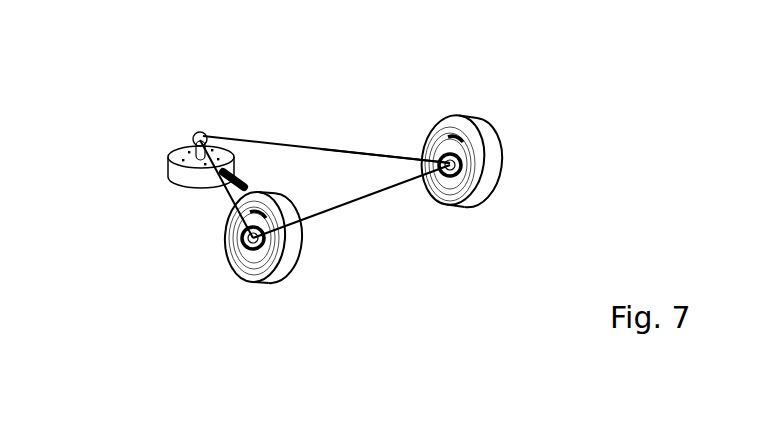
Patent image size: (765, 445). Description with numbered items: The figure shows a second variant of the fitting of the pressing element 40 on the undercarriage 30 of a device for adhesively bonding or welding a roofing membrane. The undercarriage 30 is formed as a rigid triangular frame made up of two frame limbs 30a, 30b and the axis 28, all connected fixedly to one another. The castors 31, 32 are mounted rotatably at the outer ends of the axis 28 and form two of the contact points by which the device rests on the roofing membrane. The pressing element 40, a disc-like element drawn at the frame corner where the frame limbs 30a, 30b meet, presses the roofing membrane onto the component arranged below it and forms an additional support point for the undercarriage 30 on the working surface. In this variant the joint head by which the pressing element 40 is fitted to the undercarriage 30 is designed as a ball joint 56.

The axis 28 is at (352, 203).
The undercarriage 30 is at (272, 144).
The frame limb 30a is at (228, 192).
The frame limb 30b is at (322, 152).
The castor 31 is at (235, 262).
The castor 32 is at (490, 155).
The pressing element 40 is at (167, 168).
The ball joint 56 is at (193, 133).